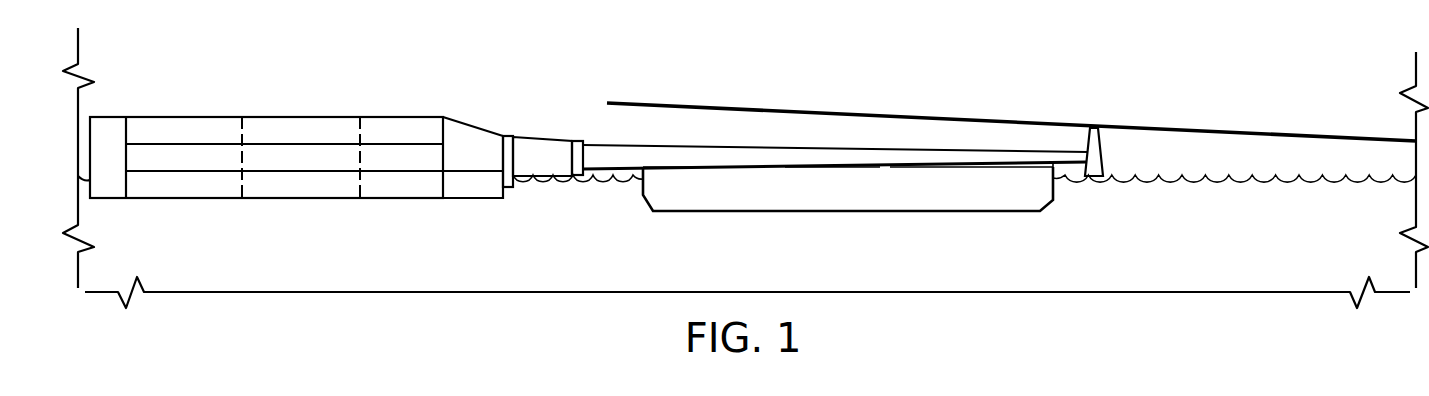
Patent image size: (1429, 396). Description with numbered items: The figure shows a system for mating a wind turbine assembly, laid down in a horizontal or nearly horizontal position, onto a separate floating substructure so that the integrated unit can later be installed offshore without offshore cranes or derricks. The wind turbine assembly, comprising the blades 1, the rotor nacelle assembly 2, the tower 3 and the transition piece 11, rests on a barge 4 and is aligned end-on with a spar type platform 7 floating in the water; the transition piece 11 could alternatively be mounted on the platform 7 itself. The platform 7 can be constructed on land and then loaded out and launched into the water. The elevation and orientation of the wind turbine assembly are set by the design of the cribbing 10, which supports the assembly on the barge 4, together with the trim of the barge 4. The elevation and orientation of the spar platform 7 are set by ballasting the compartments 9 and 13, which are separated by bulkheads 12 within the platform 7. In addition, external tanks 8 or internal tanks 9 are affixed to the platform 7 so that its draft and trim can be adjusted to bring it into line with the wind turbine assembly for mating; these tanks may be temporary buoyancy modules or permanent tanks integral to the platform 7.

The blades 1 is at (1220, 130).
The rotor nacelle assembly 2 is at (1098, 142).
The tower 3 is at (598, 153).
The barge 4 is at (847, 213).
The spar type platform 7 is at (333, 198).
The external tanks 8 is at (472, 190).
The internal tanks 9 is at (118, 190).
The cribbing 10 is at (1010, 168).
The transition piece 11 is at (522, 143).
The bulkheads 12 is at (250, 178).
The compartments 13 is at (183, 190).